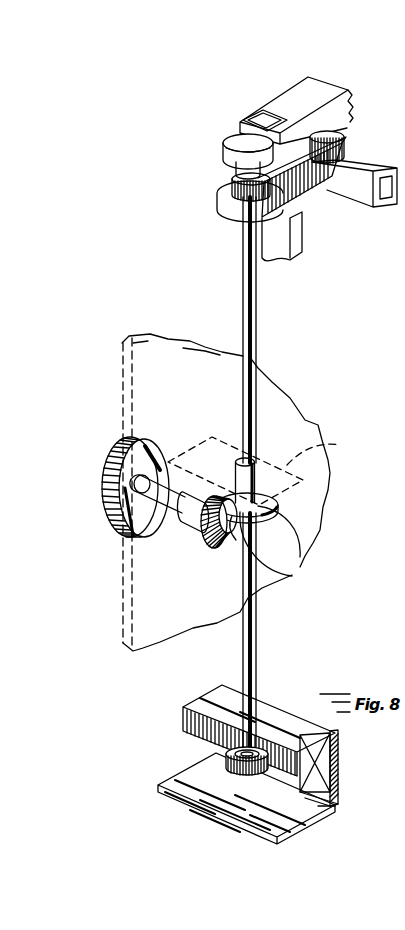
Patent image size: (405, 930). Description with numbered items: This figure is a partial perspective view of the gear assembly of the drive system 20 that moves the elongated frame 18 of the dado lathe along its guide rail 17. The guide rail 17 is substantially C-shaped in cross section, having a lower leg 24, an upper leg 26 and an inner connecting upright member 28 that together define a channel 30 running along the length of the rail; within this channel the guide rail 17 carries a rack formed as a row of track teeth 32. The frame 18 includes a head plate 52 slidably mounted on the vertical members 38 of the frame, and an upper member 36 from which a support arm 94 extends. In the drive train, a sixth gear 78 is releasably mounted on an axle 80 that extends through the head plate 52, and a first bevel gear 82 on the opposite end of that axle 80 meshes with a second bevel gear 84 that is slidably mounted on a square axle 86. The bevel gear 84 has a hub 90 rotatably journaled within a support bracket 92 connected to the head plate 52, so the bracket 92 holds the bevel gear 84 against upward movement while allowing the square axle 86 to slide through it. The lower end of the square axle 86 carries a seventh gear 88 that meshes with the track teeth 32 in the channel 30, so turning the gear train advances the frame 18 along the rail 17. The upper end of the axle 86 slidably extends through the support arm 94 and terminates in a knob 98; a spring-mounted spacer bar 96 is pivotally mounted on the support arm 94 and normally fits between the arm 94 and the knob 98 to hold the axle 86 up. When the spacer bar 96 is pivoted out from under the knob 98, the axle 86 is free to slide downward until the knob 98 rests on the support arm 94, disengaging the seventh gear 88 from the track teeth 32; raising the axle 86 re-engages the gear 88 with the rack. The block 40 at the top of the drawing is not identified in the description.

The guide rail 17 is at (281, 764).
The elongated frame 18 is at (296, 92).
The drive system 20 is at (183, 344).
The lower leg 24 is at (332, 818).
The upper leg 26 is at (318, 735).
The inner connecting upright member 28 is at (340, 747).
The channel 30 is at (338, 803).
The track teeth 32 is at (340, 787).
The upper member 36 is at (357, 193).
The vertical members 38 is at (285, 233).
The top block 40 is at (313, 80).
The head plate 52 is at (202, 340).
The sixth gear 78 is at (121, 534).
The axle 80 is at (130, 558).
The first bevel gear 82 is at (288, 576).
The second bevel gear 84 is at (300, 557).
The square axle 86 is at (258, 318).
The seventh gear 88 is at (210, 757).
The hub 90 is at (290, 478).
The support bracket 92 is at (325, 445).
The support arm 94 is at (297, 196).
The spacer bar 96 is at (347, 134).
The knob 98 is at (225, 160).